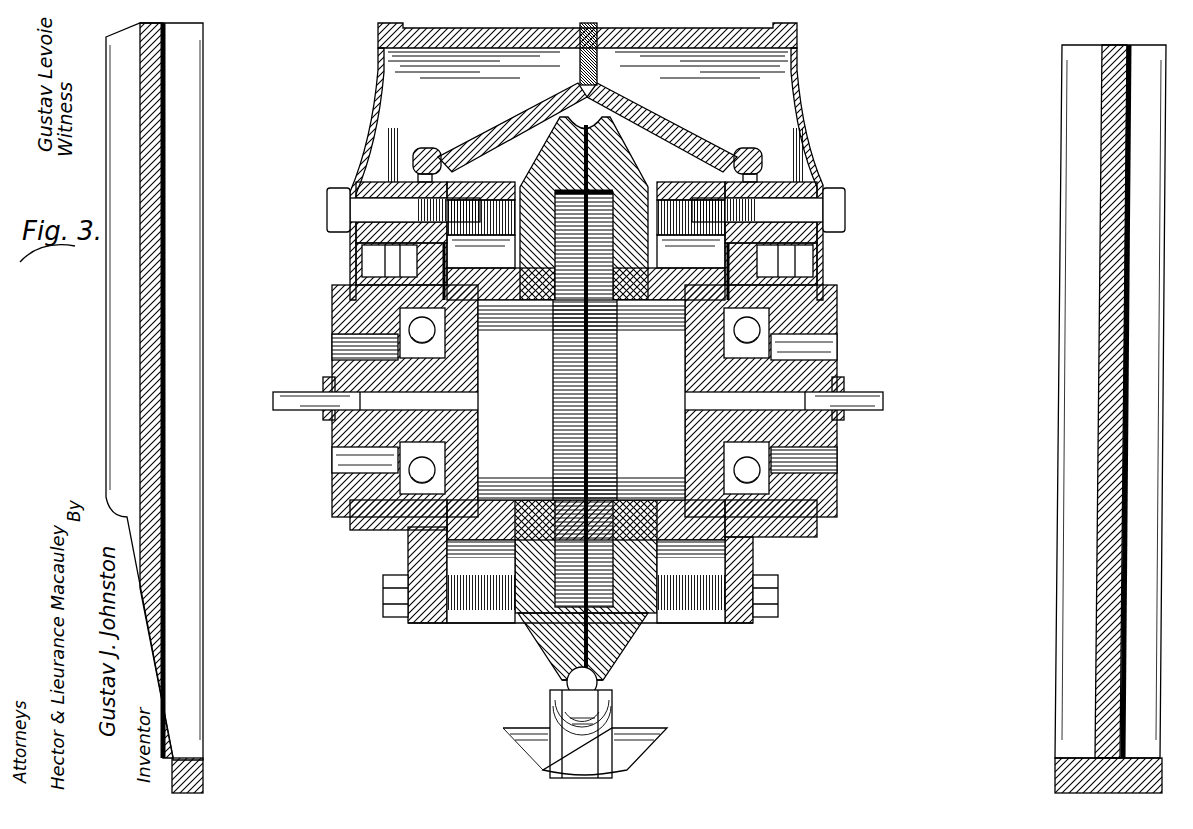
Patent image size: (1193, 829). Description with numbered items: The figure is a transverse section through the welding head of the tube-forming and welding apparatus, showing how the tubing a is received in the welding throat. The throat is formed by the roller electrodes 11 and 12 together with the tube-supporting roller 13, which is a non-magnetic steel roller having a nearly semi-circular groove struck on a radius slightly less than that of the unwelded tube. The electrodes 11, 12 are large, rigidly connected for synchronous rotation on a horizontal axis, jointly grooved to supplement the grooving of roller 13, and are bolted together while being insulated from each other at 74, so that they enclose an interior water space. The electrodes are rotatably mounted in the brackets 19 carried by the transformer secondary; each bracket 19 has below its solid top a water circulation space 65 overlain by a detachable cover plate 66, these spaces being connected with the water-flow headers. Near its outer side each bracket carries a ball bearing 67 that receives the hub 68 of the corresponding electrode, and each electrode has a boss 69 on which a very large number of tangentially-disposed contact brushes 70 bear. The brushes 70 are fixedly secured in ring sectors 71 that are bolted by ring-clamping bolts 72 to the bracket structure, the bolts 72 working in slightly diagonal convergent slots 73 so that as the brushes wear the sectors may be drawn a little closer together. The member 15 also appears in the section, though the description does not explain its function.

The roller electrode 11 is at (627, 652).
The roller electrode 12 is at (542, 648).
The tube-supporting roller 13 is at (613, 723).
The tube 15 is at (106, 290).
The bracket 19 is at (398, 164).
The water circulation space 65 is at (405, 150).
The cover plate 66 is at (357, 138).
The ball bearing 67 is at (397, 453).
The hub 68 is at (332, 360).
The boss 69 is at (490, 523).
The contact brush 70 is at (427, 255).
The ring sector 71 is at (460, 180).
The ring-clamping bolt 72 is at (332, 215).
The convergent slot 73 is at (352, 172).
The insulation 74 is at (567, 660).
The tubing a is at (610, 675).